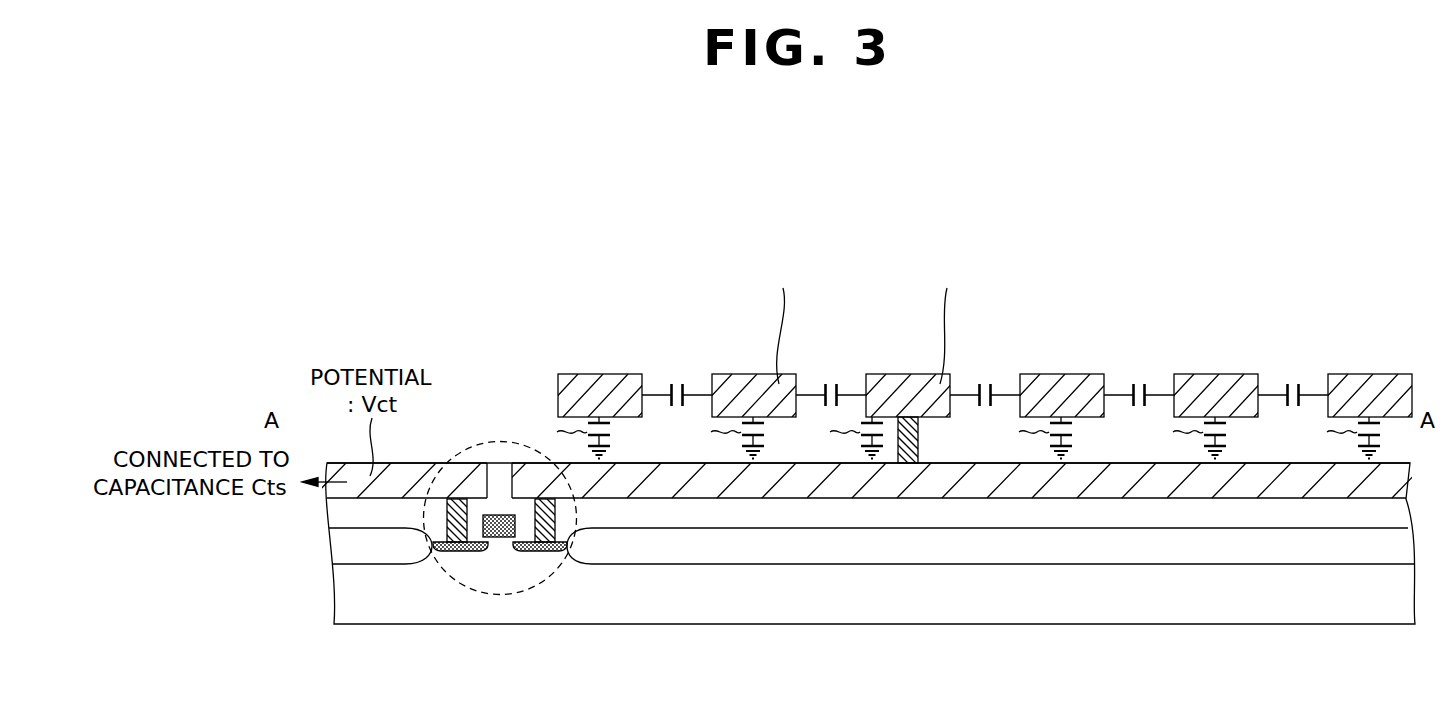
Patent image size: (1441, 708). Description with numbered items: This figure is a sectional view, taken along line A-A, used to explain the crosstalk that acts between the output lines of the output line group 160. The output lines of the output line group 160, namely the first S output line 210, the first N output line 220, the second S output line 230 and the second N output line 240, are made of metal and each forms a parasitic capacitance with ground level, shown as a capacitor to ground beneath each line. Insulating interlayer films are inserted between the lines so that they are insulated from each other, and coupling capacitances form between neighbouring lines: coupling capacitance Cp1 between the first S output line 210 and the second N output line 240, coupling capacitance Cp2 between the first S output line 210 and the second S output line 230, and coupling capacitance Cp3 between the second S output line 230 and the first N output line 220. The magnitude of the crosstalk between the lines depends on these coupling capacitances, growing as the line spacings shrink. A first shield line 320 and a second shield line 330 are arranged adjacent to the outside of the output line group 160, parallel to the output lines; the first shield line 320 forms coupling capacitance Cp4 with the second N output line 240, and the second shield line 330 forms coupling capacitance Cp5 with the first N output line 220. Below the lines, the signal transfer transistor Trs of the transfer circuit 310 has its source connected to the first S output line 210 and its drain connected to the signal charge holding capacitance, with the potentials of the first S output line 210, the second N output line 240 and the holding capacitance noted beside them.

The output line group 160 is at (870, 213).
The transfer circuit 310 is at (482, 362).
The first shield line 320 is at (600, 374).
The second N output line 240 is at (754, 374).
The first S output line 210 is at (908, 374).
The second S output line 230 is at (1062, 374).
The first N output line 220 is at (1216, 374).
The second shield line 330 is at (1370, 374).
The coupling capacitance Cp1 is at (831, 378).
The coupling capacitance Cp2 is at (985, 378).
The coupling capacitance Cp3 is at (1139, 378).
The coupling capacitance Cp4 is at (677, 378).
The coupling capacitance Cp5 is at (1293, 378).
The signal transfer transistor Trs is at (490, 440).